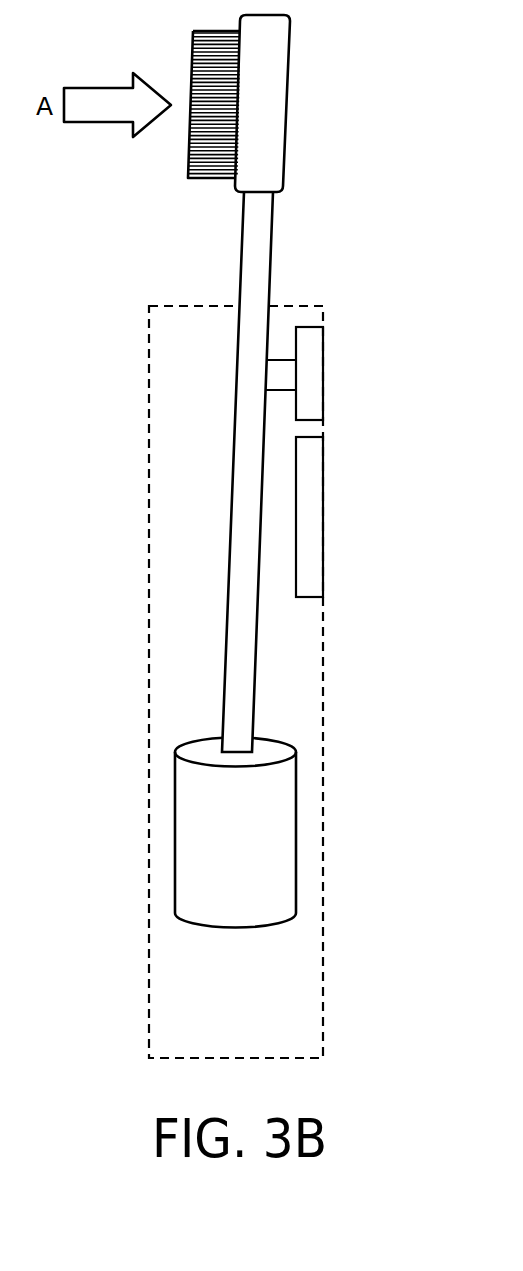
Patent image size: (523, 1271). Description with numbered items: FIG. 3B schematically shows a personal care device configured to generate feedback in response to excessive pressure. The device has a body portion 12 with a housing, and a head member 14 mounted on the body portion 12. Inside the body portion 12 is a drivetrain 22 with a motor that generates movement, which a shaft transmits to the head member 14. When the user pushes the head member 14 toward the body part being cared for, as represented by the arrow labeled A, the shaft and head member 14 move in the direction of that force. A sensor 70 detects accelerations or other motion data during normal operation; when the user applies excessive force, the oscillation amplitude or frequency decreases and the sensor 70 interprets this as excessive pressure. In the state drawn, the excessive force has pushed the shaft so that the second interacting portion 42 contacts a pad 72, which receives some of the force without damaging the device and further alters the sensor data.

The body portion 12 is at (323, 672).
The head member 14 is at (285, 127).
The drivetrain 22 is at (296, 832).
The second interacting portion 42 is at (283, 362).
The sensor 70 is at (323, 510).
The pad 72 is at (323, 405).